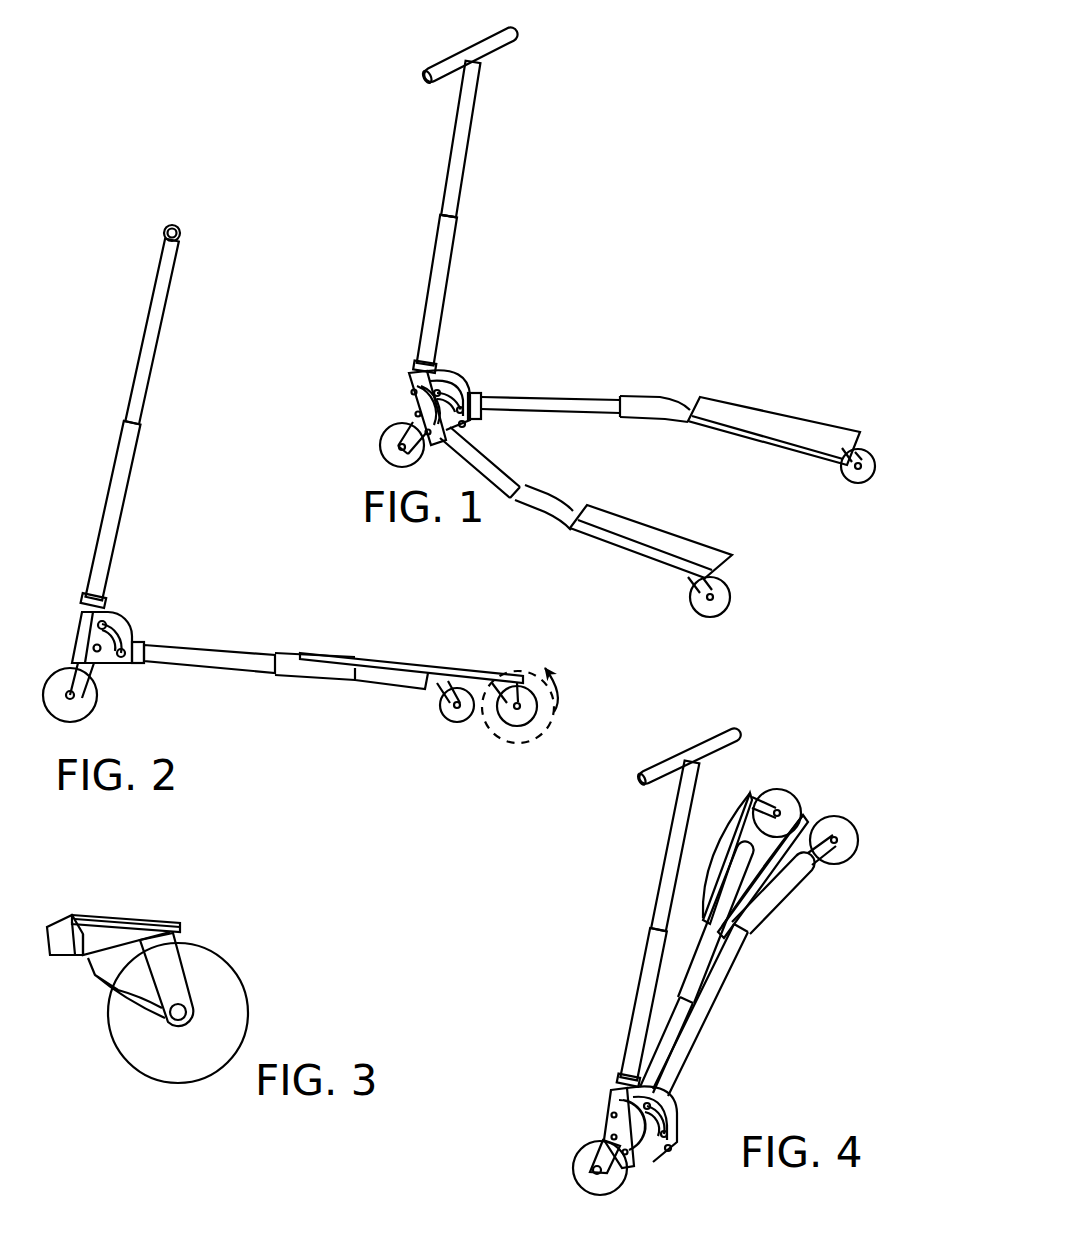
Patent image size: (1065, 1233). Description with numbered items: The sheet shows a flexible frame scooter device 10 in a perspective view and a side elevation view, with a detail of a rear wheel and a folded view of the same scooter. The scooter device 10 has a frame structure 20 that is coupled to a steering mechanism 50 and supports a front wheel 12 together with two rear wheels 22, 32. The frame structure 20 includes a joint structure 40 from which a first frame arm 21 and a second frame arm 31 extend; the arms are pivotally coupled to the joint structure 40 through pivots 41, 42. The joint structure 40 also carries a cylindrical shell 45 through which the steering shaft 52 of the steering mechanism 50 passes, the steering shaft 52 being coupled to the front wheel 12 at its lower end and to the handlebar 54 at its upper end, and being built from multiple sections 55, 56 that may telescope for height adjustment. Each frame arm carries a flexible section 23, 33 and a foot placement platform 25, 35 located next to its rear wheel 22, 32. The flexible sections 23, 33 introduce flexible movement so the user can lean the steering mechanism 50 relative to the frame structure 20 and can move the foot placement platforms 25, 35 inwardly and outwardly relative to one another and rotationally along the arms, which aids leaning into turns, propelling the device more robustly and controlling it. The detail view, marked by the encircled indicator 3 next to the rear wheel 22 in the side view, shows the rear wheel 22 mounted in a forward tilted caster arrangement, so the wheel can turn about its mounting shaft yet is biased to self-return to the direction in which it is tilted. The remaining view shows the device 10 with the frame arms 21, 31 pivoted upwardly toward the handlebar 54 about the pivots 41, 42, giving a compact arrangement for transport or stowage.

In FIG. 1, the flexible frame scooter device 10 is at (610, 152).
In FIG. 2, the flexible frame scooter device 10 is at (192, 492).
In FIG. 4, the flexible frame scooter device 10 is at (782, 720).
In FIG. 2, the front wheel 12 is at (88, 712).
In FIG. 4, the front wheel 12 is at (625, 1176).
In FIG. 1, the frame structure 20 is at (668, 314).
In FIG. 2, the frame structure 20 is at (268, 590).
In FIG. 1, the first frame arm 21 is at (618, 522).
In FIG. 2, the first frame arm 21 is at (351, 690).
In FIG. 4, the first frame arm 21 is at (732, 968).
In FIG. 1, the rear wheel 22 is at (722, 594).
In FIG. 2, the rear wheel 22 is at (512, 722).
In FIG. 3, the rear wheel 22 is at (238, 948).
In FIG. 1, the flexible section 23 is at (505, 470).
In FIG. 2, the flexible section 23 is at (218, 662).
In FIG. 4, the flexible section 23 is at (697, 943).
In FIG. 1, the foot placement platform 25 is at (678, 540).
In FIG. 2, the foot placement platform 25 is at (414, 658).
In FIG. 1, the second frame arm 31 is at (680, 395).
In FIG. 4, the second frame arm 31 is at (738, 800).
In FIG. 1, the rear wheel 32 is at (866, 456).
In FIG. 2, the rear wheel 32 is at (452, 716).
In FIG. 1, the flexible section 33 is at (568, 400).
In FIG. 1, the foot placement platform 35 is at (760, 410).
In FIG. 1, the joint structure 40 is at (408, 378).
In FIG. 2, the joint structure 40 is at (72, 615).
In FIG. 1, the pivot 41 is at (394, 442).
In FIG. 2, the pivot 41 is at (100, 654).
In FIG. 4, the pivot 41 is at (606, 1130).
In FIG. 1, the pivot 42 is at (470, 368).
In FIG. 4, the pivot 42 is at (686, 1104).
In FIG. 1, the cylindrical shell 45 is at (405, 402).
In FIG. 2, the cylindrical shell 45 is at (78, 622).
In FIG. 1, the steering mechanism 50 is at (530, 72).
In FIG. 2, the steering mechanism 50 is at (208, 292).
In FIG. 4, the steering mechanism 50 is at (706, 718).
In FIG. 1, the steering shaft 52 is at (424, 367).
In FIG. 2, the steering shaft 52 is at (94, 600).
In FIG. 4, the steering shaft 52 is at (628, 1080).
In FIG. 1, the handlebar 54 is at (452, 62).
In FIG. 2, the handlebar 54 is at (164, 228).
In FIG. 4, the handlebar 54 is at (665, 768).
In FIG. 1, the shaft section 55 is at (460, 139).
In FIG. 2, the shaft section 55 is at (152, 332).
In FIG. 4, the shaft section 55 is at (675, 846).
In FIG. 1, the shaft section 56 is at (437, 290).
In FIG. 2, the shaft section 56 is at (113, 510).
In FIG. 4, the shaft section 56 is at (643, 1004).
In FIG. 2, the pivot direction 3 is at (480, 683).